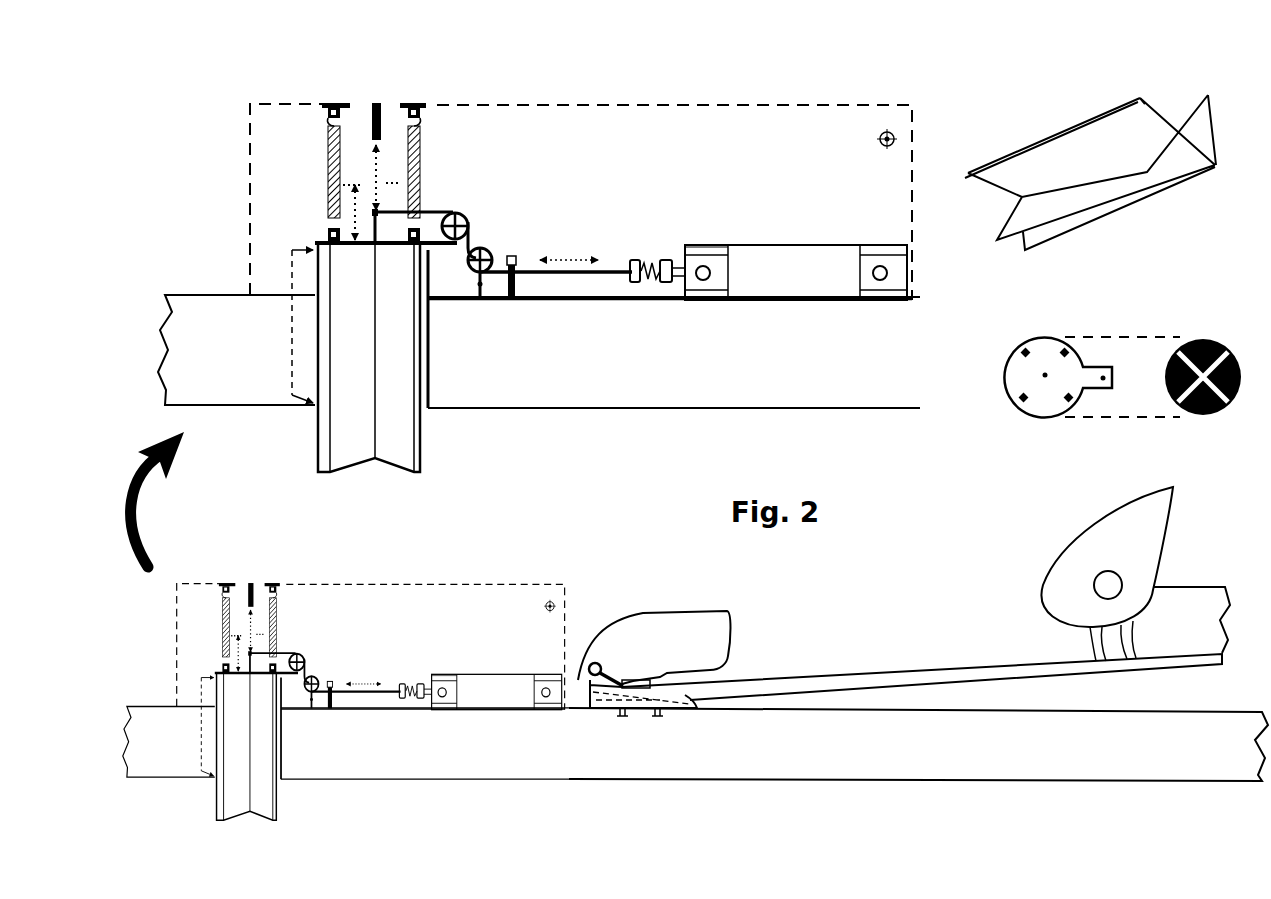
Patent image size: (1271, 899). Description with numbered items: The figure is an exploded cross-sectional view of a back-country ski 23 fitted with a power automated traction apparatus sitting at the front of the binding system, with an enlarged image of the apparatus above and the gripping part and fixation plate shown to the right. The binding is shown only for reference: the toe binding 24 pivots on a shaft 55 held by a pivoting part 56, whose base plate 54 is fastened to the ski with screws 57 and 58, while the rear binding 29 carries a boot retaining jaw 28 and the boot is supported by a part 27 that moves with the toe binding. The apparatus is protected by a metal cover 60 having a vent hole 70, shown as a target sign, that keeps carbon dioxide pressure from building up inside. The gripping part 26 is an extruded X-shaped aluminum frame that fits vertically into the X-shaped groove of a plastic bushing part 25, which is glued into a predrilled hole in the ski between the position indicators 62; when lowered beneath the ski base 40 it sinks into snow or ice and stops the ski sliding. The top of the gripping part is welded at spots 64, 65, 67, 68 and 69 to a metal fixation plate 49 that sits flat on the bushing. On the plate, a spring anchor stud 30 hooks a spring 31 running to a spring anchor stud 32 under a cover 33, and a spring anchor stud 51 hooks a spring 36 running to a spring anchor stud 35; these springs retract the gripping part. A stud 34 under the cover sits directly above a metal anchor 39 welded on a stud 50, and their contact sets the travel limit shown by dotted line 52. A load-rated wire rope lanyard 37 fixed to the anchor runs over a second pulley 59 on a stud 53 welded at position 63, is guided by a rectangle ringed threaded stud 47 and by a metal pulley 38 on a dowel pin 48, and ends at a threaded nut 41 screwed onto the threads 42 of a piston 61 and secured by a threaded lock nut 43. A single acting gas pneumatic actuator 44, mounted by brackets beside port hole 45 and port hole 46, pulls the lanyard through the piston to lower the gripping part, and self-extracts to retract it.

The back-country ski 23 is at (180, 316).
The toe binding 24 is at (665, 623).
The plastic bushing part 25 is at (1203, 338).
The gripping part 26 is at (405, 462).
The boot support part 27 is at (1009, 660).
The boot retaining jaw 28 is at (1052, 573).
The rear binding 29 is at (1190, 585).
The spring anchor stud 30 is at (325, 238).
The spring 31 is at (326, 157).
The spring anchor stud 32 is at (325, 109).
The cover 33 is at (389, 110).
The stud 34 is at (370, 118).
The spring anchor stud 35 is at (428, 113).
The spring 36 is at (423, 152).
The load-rated wire rope lanyard 37 is at (437, 211).
The metal pulley 38 is at (487, 247).
The metal anchor 39 is at (382, 210).
The ski base 40 is at (522, 263).
The threaded nut 41 is at (635, 257).
The threads 42 is at (650, 257).
The threaded lock nut 43 is at (667, 257).
The single acting gas pneumatic actuator 44 is at (780, 255).
The port hole 45 is at (714, 273).
The port hole 46 is at (870, 273).
The rectangle ringed threaded stud 47 is at (519, 290).
The metal dowel pin 48 is at (486, 283).
The metal fixation plate 49 is at (381, 250).
The stud 50 is at (374, 246).
The spring anchor stud 51 is at (395, 252).
The travel distance dotted line 52 is at (348, 176).
The stud 53 is at (462, 245).
The base plate 54 is at (698, 706).
The shaft 55 is at (597, 664).
The pivoting part 56 is at (613, 673).
The screw 57 is at (625, 718).
The screw 58 is at (662, 717).
The second pulley 59 is at (469, 217).
The metal cover 60 is at (906, 103).
The piston 61 is at (690, 246).
The position indicators 62 is at (313, 330).
The welding position 63 is at (1104, 380).
The welding spot 64 is at (1068, 400).
The welding spot 65 is at (1024, 400).
The welding spot 67 is at (1023, 353).
The welding spot 68 is at (1062, 348).
The welding spot 69 is at (1045, 373).
The vent hole 70 is at (878, 144).